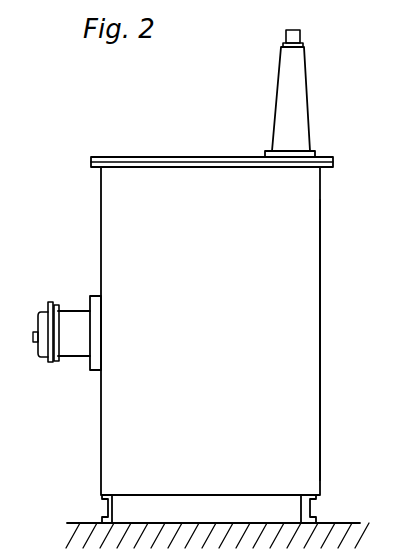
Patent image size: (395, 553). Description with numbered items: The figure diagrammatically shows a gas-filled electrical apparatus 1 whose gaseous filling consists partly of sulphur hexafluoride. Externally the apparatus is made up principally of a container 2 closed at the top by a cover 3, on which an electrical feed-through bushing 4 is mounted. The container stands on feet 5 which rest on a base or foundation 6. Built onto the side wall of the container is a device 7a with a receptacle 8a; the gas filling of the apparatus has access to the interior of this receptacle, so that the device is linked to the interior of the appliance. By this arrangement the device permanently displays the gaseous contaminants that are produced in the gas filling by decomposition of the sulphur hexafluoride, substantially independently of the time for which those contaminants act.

The electrical apparatus 1 is at (306, 231).
The container 2 is at (310, 283).
The cover 3 is at (333, 160).
The electrical feed-through bushing 4 is at (302, 93).
The feet 5 is at (105, 509).
The base or foundation 6 is at (352, 532).
The device 7a is at (91, 302).
The receptacle 8a is at (71, 352).